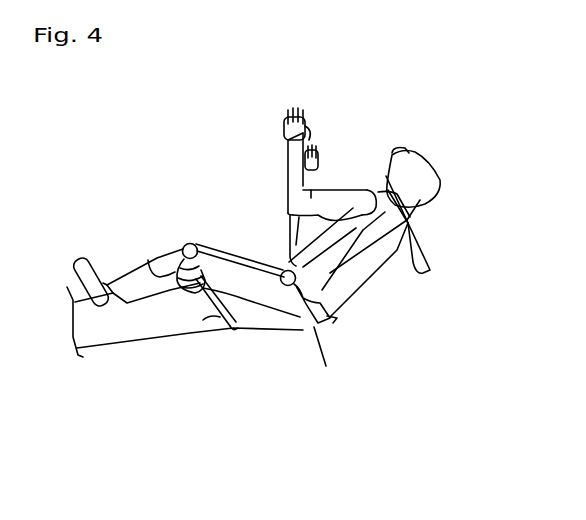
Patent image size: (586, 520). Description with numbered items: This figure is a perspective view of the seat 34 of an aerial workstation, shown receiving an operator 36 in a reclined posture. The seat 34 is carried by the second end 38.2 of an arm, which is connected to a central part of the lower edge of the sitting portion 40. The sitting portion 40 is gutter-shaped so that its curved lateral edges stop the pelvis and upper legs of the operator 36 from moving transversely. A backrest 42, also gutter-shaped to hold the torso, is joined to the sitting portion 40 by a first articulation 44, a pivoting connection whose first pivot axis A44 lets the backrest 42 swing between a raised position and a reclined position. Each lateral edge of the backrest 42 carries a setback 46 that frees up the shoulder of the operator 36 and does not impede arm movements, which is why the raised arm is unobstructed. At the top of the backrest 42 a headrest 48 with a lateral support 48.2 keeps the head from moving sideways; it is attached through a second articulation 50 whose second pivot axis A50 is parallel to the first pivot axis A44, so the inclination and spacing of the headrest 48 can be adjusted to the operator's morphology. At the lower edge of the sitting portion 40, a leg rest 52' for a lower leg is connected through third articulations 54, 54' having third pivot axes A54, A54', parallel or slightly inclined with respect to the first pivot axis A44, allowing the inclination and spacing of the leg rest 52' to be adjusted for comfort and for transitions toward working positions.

The seat 34 is at (330, 325).
The operator 36 is at (359, 186).
The second end of the arm 38.2 is at (177, 305).
The sitting portion 40 is at (260, 288).
The backrest 42 is at (355, 268).
The first articulation 44 is at (302, 333).
The first pivot axis A44 is at (282, 268).
The setback 46 is at (410, 247).
The headrest 48 is at (428, 182).
The lateral support 48.2 is at (400, 172).
The second articulation 50 is at (425, 270).
The second pivot axis A50 is at (415, 228).
The leg rest 52' is at (133, 326).
The third articulation 54 is at (227, 378).
The third pivot axis A54 is at (218, 365).
The third articulation 54' is at (227, 205).
The third pivot axis A54' is at (166, 242).